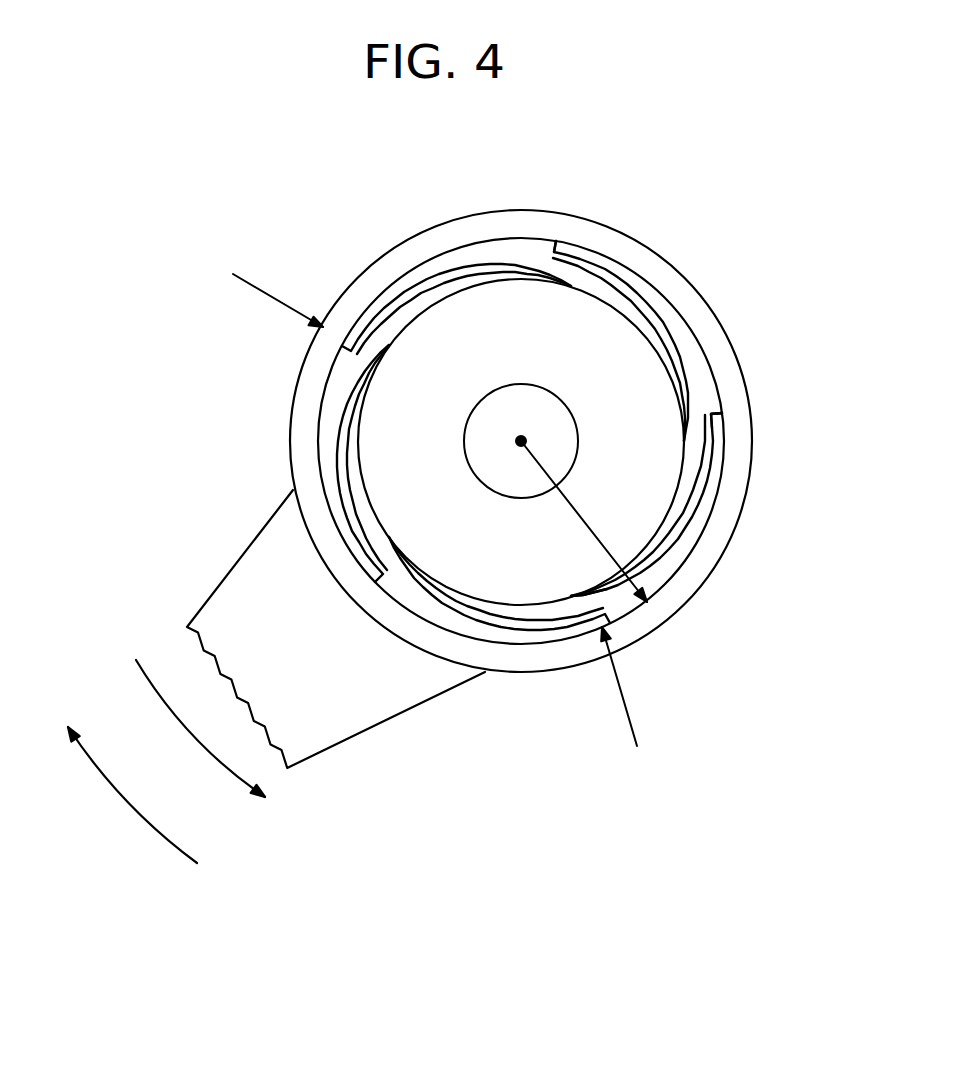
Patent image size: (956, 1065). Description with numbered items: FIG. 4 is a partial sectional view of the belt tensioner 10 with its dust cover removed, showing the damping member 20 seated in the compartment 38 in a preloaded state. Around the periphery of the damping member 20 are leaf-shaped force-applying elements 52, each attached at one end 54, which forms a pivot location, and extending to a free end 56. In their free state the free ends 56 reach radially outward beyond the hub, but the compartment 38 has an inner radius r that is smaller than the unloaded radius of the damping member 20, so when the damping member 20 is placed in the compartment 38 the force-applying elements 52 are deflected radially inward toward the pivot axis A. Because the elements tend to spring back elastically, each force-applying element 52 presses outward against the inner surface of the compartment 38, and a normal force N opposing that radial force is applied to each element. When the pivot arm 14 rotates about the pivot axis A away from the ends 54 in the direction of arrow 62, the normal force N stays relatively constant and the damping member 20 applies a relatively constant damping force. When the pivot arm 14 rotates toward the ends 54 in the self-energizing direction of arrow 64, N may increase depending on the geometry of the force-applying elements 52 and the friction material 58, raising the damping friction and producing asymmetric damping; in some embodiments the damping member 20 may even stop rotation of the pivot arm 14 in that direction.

The tensioner 10 is at (284, 248).
The pivot arm 14 is at (360, 710).
The damping member 20 is at (540, 300).
The compartment 38 is at (692, 353).
The force-applying elements 52 is at (630, 280).
The end 54 is at (650, 557).
The free end 56 is at (722, 406).
The friction material 58 is at (592, 247).
The arrow 62 is at (220, 765).
The arrow 64 is at (133, 812).
The normal force N is at (245, 277).
The pivot axis A is at (519, 434).
The inner radius r is at (598, 528).